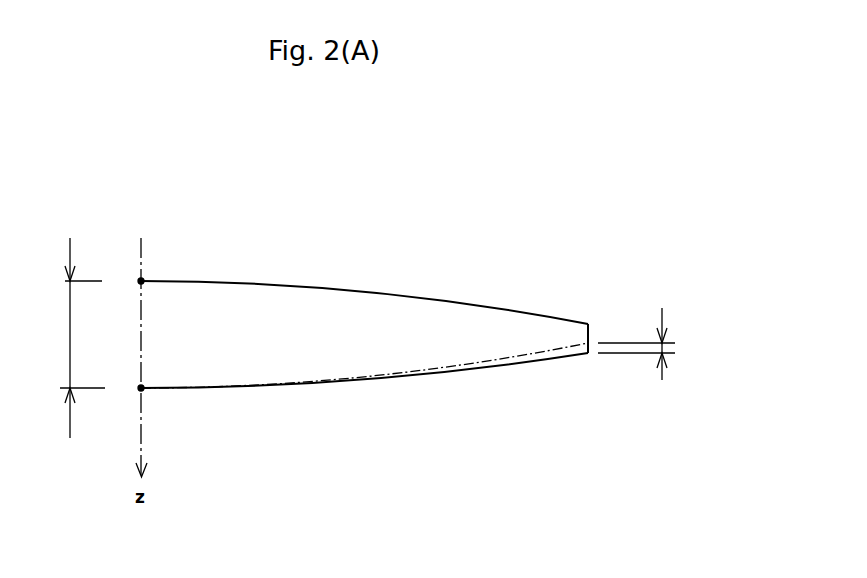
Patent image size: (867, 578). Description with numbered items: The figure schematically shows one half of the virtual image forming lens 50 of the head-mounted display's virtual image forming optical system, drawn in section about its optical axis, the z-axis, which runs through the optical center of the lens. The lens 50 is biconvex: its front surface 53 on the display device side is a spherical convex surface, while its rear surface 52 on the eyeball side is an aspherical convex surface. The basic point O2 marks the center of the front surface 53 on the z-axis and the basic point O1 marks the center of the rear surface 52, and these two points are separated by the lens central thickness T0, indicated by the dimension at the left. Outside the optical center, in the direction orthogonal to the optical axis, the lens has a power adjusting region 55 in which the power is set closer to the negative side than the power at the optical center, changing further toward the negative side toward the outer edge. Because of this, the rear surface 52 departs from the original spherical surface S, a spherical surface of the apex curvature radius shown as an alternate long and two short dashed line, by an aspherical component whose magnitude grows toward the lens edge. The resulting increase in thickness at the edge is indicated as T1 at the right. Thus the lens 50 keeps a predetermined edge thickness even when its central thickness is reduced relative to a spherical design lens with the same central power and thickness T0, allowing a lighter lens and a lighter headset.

The virtual image forming lens 50 is at (363, 302).
The rear surface 52 is at (385, 382).
The front surface 53 is at (332, 286).
The power adjusting region 55 is at (364, 259).
The original spherical surface S is at (513, 357).
The basic point on the rear surface O1 is at (141, 388).
The basic point on the front surface O2 is at (141, 281).
The lens central thickness T0 is at (67, 338).
The amount of increase in thickness at the edge of the lens T1 is at (655, 344).